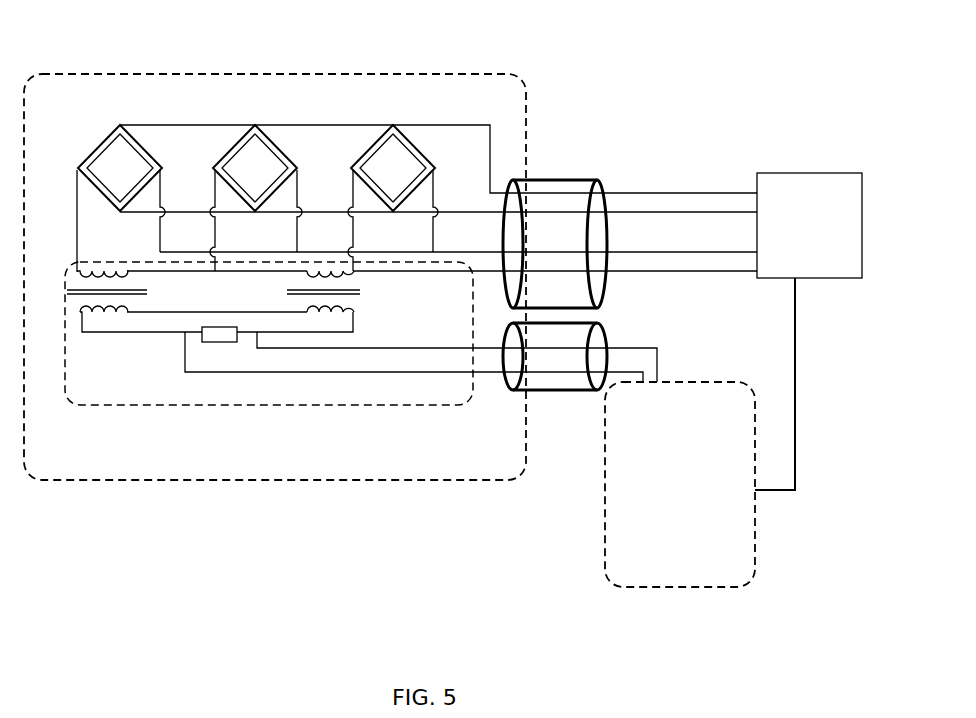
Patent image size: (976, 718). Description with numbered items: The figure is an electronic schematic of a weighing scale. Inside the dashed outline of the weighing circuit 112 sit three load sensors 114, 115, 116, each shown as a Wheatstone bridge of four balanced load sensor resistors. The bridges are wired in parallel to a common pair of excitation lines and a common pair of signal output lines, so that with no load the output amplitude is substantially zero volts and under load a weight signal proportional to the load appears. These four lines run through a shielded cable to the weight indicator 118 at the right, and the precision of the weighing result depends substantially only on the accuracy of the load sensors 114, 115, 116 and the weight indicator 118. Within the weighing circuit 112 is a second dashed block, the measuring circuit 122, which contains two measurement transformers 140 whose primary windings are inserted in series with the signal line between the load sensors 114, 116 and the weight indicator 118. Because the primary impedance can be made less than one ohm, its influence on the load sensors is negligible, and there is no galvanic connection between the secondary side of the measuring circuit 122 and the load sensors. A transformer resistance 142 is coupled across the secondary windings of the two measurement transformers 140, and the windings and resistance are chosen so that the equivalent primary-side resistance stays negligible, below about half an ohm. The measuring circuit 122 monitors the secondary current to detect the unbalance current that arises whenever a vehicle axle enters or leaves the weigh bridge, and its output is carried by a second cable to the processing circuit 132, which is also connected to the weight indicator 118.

The weighing circuit 112 is at (390, 249).
The load sensor 114 is at (122, 114).
The load sensor 115 is at (254, 114).
The load sensor 116 is at (389, 114).
The weight indicator 118 is at (808, 331).
The measuring circuit 122 is at (348, 323).
The processing circuit 132 is at (680, 484).
The measurement transformer 140 is at (92, 267).
The transformer resistance 142 is at (213, 356).